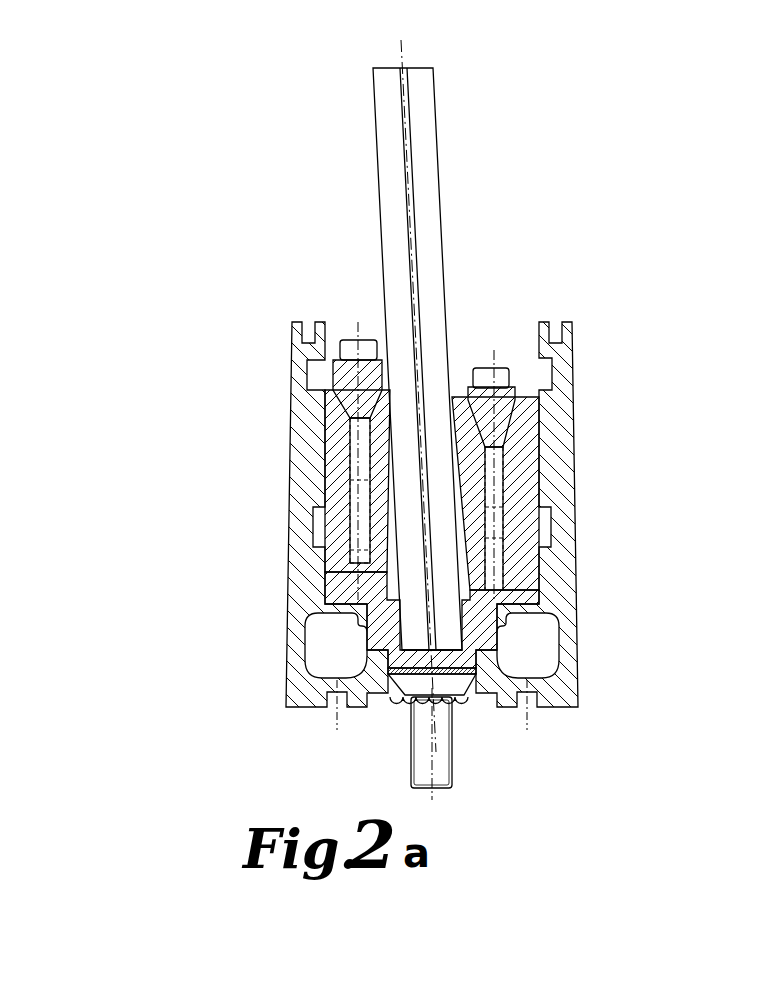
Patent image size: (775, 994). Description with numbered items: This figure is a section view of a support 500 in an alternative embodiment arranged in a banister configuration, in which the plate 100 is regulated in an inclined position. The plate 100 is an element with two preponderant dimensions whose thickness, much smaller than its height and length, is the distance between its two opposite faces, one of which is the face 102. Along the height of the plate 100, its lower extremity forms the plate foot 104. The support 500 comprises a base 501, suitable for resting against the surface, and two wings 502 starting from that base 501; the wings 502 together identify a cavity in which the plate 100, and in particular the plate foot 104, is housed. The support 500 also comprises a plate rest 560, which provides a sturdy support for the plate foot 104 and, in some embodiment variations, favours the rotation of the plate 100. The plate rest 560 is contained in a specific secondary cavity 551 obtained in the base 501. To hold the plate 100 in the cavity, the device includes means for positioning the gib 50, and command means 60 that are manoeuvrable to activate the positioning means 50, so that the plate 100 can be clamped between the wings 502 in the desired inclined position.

The plate 100 is at (262, 168).
The face of the plate 102 is at (438, 188).
The plate foot 104 is at (448, 633).
The support 500 is at (264, 350).
The means for positioning the gib 50 is at (342, 374).
The command means 60 is at (500, 378).
The wing 502 is at (298, 508).
The secondary cavity 551 is at (470, 593).
The plate rest 560 is at (393, 628).
The base 501 is at (473, 684).